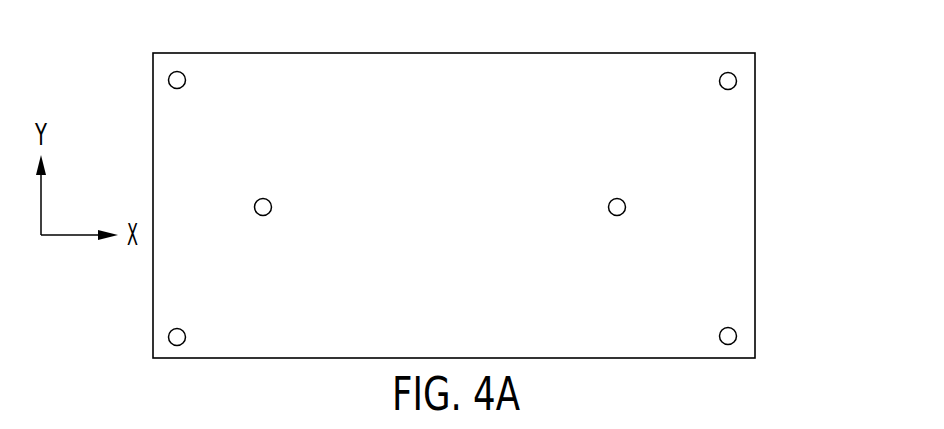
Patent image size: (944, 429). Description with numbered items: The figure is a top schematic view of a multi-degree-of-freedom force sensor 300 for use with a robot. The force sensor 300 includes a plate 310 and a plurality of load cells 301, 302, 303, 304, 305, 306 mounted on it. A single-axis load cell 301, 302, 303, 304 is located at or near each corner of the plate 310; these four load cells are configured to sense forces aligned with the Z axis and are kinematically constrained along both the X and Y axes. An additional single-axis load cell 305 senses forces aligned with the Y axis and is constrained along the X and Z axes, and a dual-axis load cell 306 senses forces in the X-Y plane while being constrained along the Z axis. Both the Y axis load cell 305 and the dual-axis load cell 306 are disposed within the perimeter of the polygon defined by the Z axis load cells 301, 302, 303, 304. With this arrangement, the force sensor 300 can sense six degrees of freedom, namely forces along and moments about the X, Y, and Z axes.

The force sensor 300 is at (507, 179).
The single-axis load cell 301 is at (179, 72).
The single-axis load cell 302 is at (730, 72).
The single-axis load cell 303 is at (179, 326).
The single-axis load cell 304 is at (729, 326).
The Y axis load cell 305 is at (265, 197).
The dual-axis load cell 306 is at (617, 196).
The plate 310 is at (757, 330).